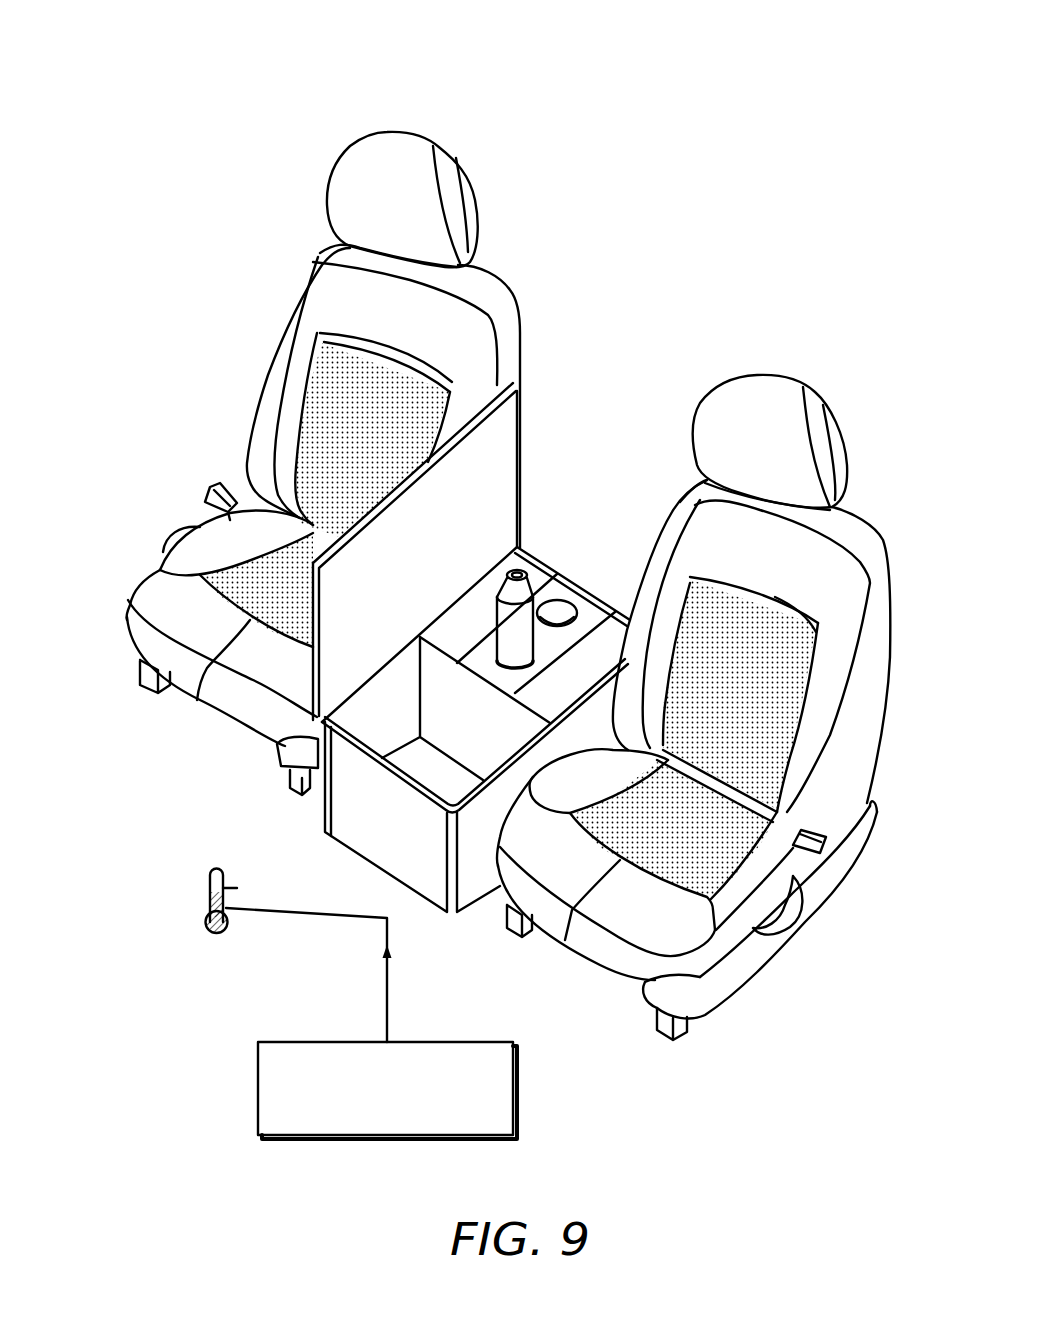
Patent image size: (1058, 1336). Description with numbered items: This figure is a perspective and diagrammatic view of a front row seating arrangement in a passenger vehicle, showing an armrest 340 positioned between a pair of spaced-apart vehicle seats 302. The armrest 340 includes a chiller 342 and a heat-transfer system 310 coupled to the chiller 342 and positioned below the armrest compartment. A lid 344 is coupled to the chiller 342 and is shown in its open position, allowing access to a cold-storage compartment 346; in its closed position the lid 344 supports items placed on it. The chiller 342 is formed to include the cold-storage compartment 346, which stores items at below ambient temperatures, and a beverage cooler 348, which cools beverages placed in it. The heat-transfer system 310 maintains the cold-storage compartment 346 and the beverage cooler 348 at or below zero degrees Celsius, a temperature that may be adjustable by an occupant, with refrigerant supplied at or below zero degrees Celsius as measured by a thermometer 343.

The vehicle seats 302 is at (387, 127).
The heat-transfer system 310 is at (250, 1082).
The armrest 340 is at (312, 810).
The chiller 342 is at (483, 597).
The thermometer 343 is at (207, 898).
The lid 344 is at (487, 443).
The cold-storage compartment 346 is at (440, 812).
The beverage cooler 348 is at (597, 597).